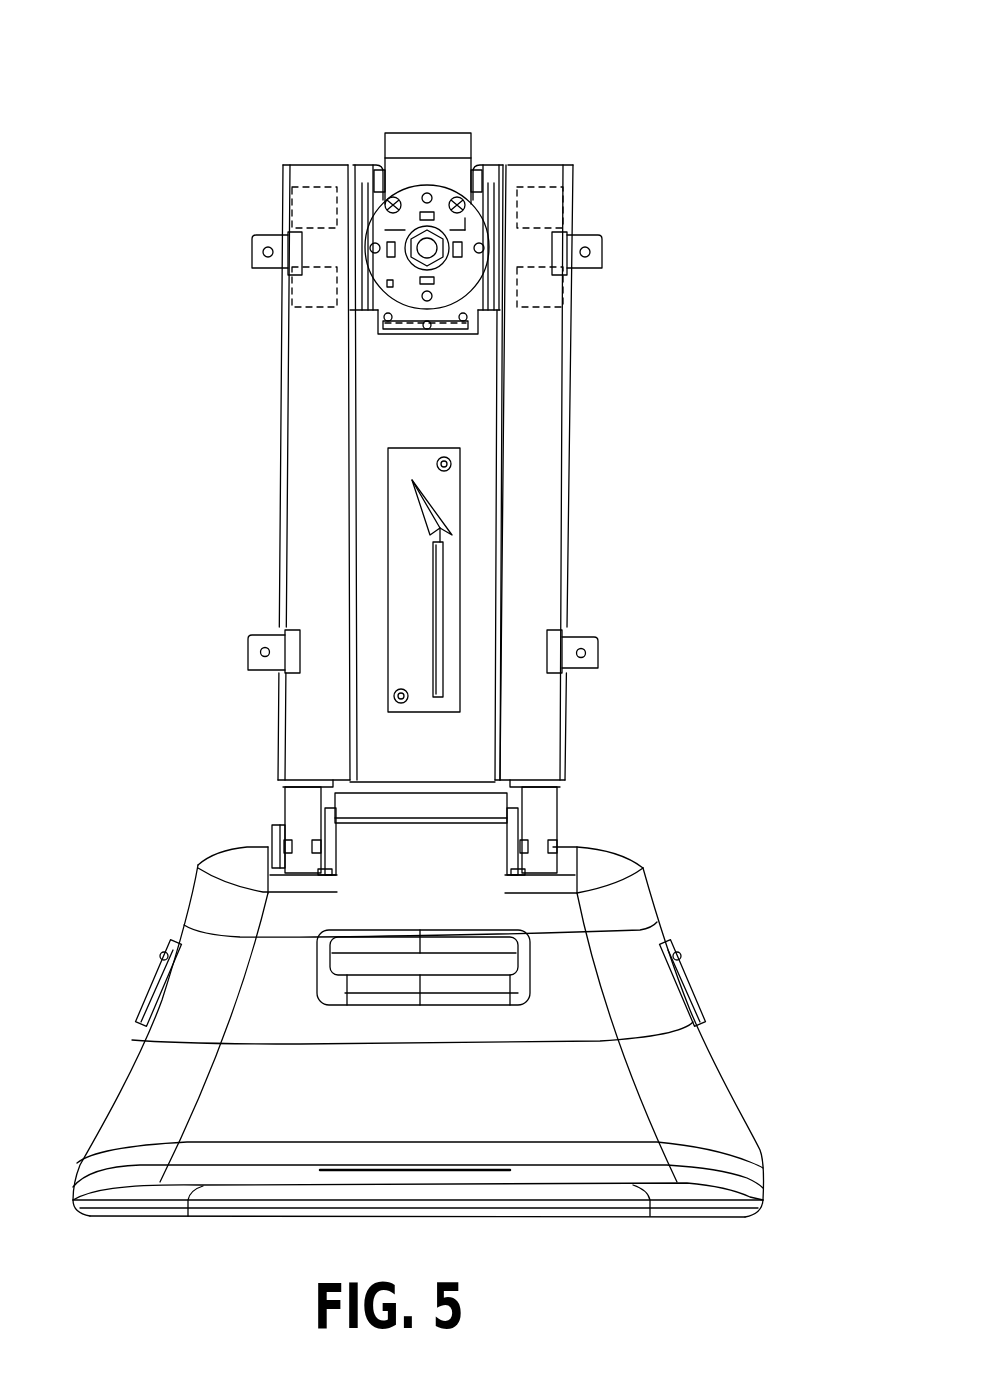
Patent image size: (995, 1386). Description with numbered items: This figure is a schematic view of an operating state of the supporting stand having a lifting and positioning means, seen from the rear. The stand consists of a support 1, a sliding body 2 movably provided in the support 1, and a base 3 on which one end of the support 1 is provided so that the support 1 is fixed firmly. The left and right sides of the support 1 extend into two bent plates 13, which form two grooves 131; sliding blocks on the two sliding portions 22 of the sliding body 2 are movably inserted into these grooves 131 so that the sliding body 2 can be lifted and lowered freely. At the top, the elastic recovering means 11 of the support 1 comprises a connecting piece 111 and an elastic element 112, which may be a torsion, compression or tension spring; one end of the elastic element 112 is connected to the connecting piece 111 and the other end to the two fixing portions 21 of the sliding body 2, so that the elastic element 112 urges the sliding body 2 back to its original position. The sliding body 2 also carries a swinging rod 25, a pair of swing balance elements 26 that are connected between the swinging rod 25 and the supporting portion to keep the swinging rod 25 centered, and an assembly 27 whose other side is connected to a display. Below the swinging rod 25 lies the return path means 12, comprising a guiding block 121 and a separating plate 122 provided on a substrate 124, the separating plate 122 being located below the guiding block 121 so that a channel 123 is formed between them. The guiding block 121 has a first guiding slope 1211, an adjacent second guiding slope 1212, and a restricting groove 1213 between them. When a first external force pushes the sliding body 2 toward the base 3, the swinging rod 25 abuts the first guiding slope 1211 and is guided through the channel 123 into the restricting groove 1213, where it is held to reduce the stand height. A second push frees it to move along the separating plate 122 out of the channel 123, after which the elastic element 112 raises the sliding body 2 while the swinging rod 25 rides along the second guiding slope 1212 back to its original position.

The support 1 is at (575, 450).
The sliding body 2 is at (373, 312).
The base 3 is at (657, 908).
The elastic recovering means 11 is at (484, 158).
The return path means 12 is at (388, 668).
The bent plates 13 is at (484, 406).
The fixing portions 21 is at (373, 193).
The sliding portions 22 is at (320, 250).
The swinging rod 25 is at (427, 340).
The swing balance elements 26 is at (398, 340).
The assembly 27 is at (383, 268).
The connecting piece 111 is at (483, 200).
The elastic element 112 is at (432, 140).
The guiding block 121 is at (270, 577).
The separating plate 122 is at (430, 598).
The channel 123 is at (447, 540).
The substrate 124 is at (403, 627).
The grooves 131 is at (318, 183).
The first guiding slope 1211 is at (392, 461).
The second guiding slope 1212 is at (417, 516).
The restricting groove 1213 is at (433, 545).